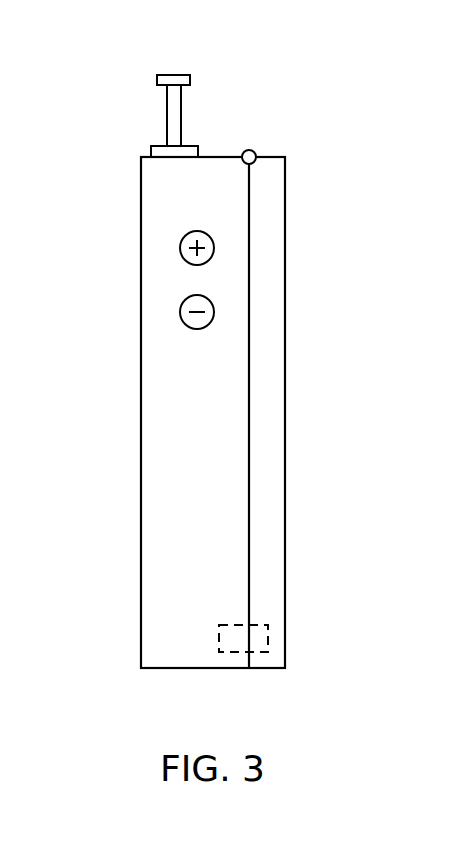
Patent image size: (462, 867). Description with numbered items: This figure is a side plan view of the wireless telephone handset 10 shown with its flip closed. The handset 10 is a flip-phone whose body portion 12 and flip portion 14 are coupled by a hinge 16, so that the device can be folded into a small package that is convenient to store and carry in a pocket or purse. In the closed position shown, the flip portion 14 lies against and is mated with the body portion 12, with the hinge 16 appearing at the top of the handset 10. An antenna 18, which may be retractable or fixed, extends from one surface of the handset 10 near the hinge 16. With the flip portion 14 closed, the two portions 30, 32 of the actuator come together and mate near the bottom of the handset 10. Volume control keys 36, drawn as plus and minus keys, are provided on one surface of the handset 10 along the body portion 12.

The wireless telephone handset 10 is at (348, 203).
The body portion 12 is at (168, 443).
The flip portion 14 is at (270, 393).
The hinge 16 is at (250, 150).
The antenna 18 is at (167, 115).
The actuator portion 30 is at (258, 641).
The actuator portion 32 is at (232, 641).
The volume control keys 36 is at (180, 312).